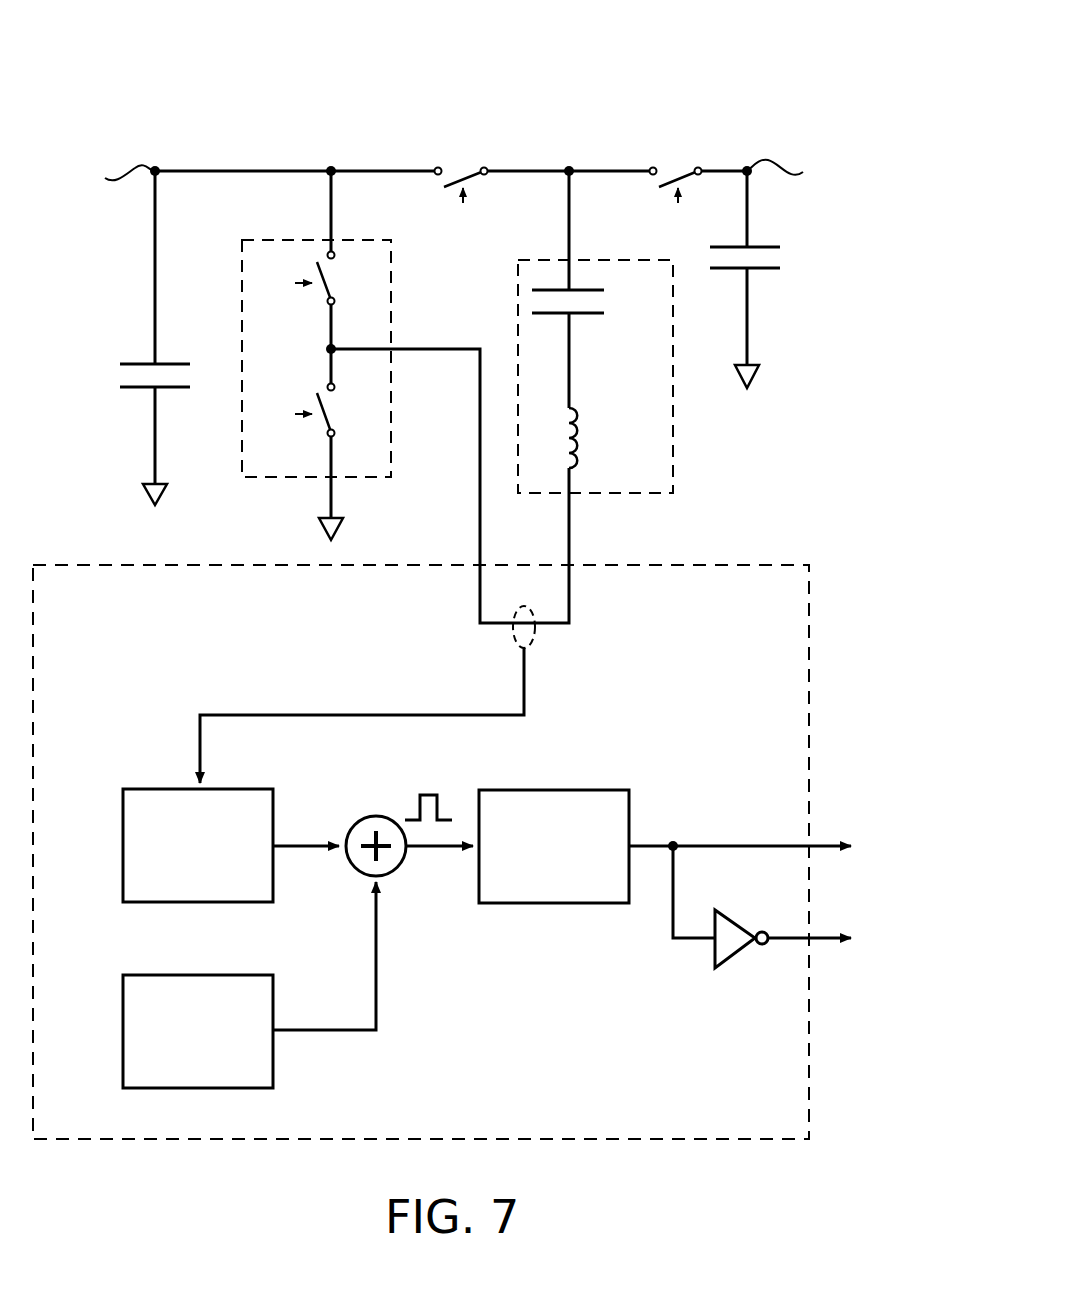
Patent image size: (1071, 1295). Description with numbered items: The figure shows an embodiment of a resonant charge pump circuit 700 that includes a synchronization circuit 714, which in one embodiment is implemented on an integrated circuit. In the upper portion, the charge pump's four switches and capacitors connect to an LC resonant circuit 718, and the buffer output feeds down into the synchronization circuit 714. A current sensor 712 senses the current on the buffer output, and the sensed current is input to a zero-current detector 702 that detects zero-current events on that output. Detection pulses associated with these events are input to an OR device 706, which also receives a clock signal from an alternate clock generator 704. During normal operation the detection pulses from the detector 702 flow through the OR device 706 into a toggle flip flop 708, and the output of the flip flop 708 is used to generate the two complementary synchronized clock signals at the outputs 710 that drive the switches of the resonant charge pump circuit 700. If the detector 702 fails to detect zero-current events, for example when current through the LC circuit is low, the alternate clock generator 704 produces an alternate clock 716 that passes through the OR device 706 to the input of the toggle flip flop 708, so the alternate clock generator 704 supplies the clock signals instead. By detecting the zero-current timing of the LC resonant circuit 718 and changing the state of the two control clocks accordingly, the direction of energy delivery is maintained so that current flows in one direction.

The resonant charge pump circuit 700 is at (768, 63).
The zero-current detector 702 is at (131, 789).
The alternate clock generator 704 is at (133, 975).
The OR device 706 is at (354, 822).
The toggle flip flop 708 is at (498, 790).
The switch control outputs S1 and S2 710 is at (886, 813).
The current sensor 712 is at (543, 650).
The synchronization circuit 714 is at (757, 1140).
The alternate clock 716 is at (375, 985).
The LC resonant circuit 718 is at (673, 445).